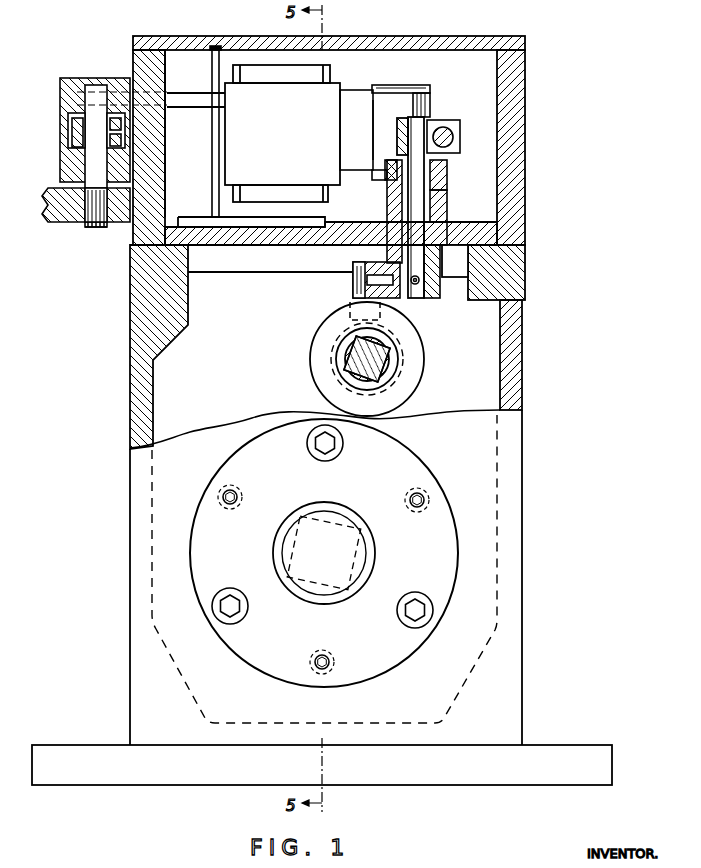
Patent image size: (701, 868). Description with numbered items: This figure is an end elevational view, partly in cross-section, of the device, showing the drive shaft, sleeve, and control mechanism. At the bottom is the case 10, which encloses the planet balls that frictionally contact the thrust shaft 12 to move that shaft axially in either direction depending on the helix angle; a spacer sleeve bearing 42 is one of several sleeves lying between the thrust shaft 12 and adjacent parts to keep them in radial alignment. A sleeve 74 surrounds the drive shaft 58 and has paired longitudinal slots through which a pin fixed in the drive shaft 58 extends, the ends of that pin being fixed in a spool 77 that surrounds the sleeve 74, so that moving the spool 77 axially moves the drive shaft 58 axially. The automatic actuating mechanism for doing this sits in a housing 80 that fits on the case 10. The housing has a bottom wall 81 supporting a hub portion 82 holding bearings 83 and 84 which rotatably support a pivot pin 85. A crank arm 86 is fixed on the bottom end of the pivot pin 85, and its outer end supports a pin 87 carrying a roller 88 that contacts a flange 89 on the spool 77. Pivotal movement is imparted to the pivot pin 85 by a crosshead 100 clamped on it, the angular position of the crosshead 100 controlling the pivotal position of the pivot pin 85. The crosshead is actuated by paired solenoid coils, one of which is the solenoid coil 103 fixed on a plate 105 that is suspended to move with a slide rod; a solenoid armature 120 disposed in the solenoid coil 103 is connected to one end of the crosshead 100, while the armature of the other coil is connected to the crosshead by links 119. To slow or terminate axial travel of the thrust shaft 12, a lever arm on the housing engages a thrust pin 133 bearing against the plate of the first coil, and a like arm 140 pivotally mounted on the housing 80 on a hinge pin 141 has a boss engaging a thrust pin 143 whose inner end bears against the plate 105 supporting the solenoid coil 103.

The case 10 is at (527, 303).
The thrust shaft 12 is at (348, 550).
The spacer sleeve bearing 42 is at (333, 508).
The drive shaft 58 is at (362, 351).
The sleeve 74 is at (340, 366).
The spool 77 is at (386, 378).
The housing 80 is at (528, 167).
The bottom wall 81 is at (345, 231).
The hub portion 82 is at (446, 186).
The bearing 83 is at (441, 201).
The bearing 84 is at (440, 230).
The pivot pin 85 is at (422, 131).
The crank arm 86 is at (431, 290).
The pin 87 is at (358, 275).
The roller 88 is at (350, 305).
The flange 89 is at (414, 352).
The crosshead 100 is at (457, 135).
The solenoid coil 103 is at (282, 133).
The plate 105 is at (212, 195).
The links 119 is at (385, 90).
The solenoid armature 120 is at (357, 107).
The thrust pin 133 is at (181, 99).
The arm 140 is at (62, 212).
The hinge pin 141 is at (100, 98).
The thrust pin 143 is at (196, 101).